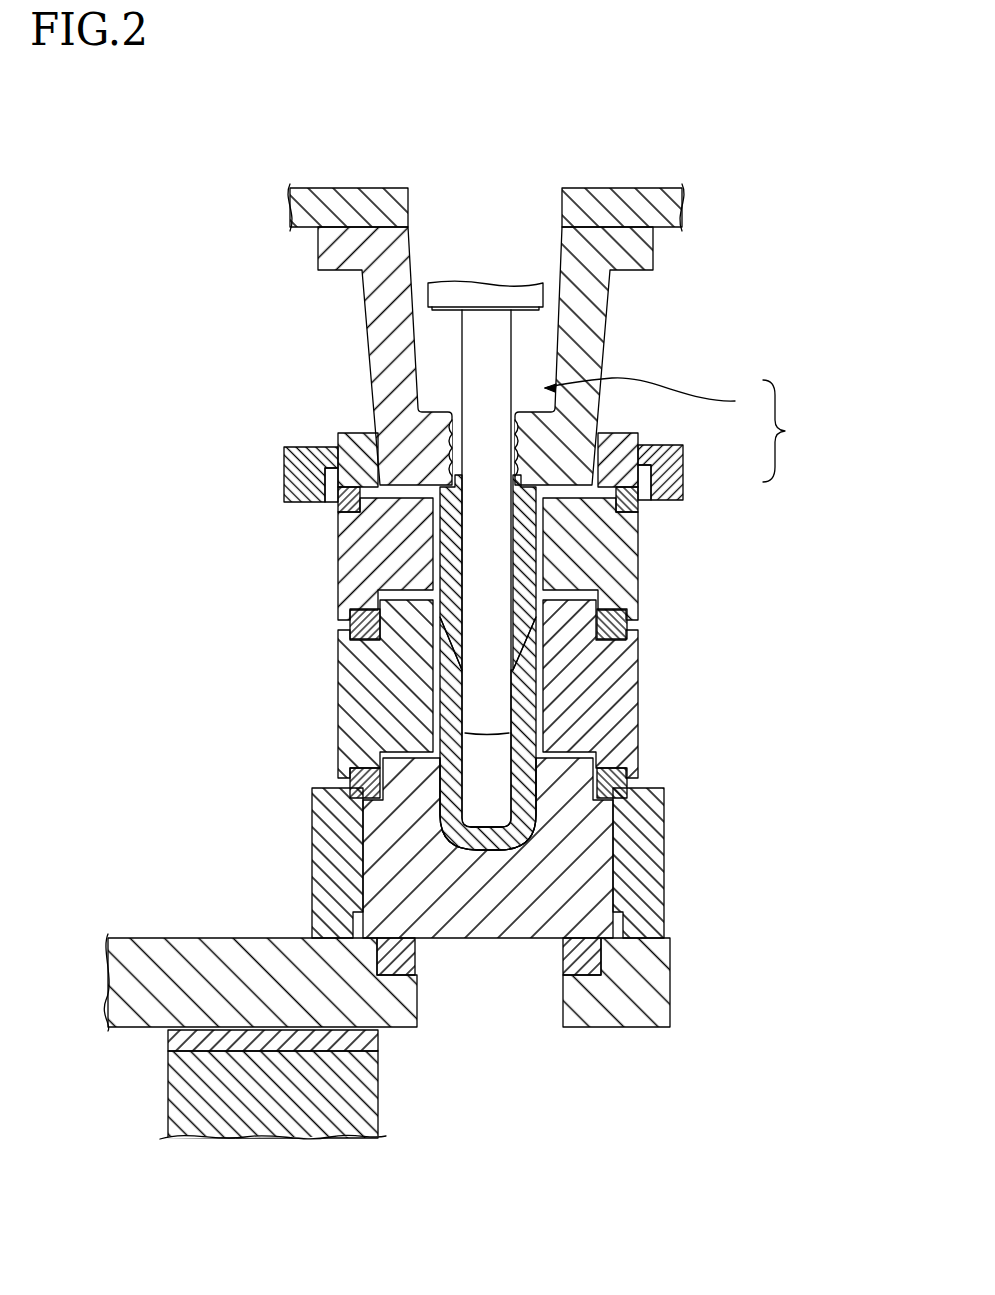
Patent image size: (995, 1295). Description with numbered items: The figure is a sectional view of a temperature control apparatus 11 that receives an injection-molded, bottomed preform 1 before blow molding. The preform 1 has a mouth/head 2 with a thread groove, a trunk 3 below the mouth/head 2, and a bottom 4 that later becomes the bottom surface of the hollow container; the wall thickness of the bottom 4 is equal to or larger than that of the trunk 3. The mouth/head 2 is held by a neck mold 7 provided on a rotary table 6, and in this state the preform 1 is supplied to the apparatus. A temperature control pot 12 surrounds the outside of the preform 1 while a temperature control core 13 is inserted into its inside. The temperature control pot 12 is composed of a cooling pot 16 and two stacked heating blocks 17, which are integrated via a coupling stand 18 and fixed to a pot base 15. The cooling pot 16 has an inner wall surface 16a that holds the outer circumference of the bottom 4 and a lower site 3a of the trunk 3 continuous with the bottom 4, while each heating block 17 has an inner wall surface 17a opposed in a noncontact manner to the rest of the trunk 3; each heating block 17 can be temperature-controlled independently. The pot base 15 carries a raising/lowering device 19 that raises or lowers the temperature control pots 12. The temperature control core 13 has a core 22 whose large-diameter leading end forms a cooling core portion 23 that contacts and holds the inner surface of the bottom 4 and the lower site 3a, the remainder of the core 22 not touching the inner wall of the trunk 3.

The preform 1 is at (433, 533).
The mouth/head 2 is at (450, 447).
The trunk 3 is at (457, 688).
The lower site of the trunk 3a is at (477, 794).
The bottom 4 is at (489, 838).
The rotary table 6 is at (621, 199).
The neck mold 7 is at (606, 299).
The temperature control apparatus 11 is at (790, 431).
The temperature control pot 12 is at (652, 522).
The temperature control core 13 is at (656, 396).
The pot base 15 is at (660, 985).
The cooling pot 16 is at (597, 862).
The inner wall surface of the cooling pot 16a is at (495, 780).
The heating block 17 is at (630, 576).
The inner wall surface of the heating block 17a is at (537, 556).
The coupling stand 18 is at (290, 447).
The raising/lowering device 19 is at (367, 1104).
The core 22 is at (480, 635).
The cooling core portion 23 is at (453, 808).